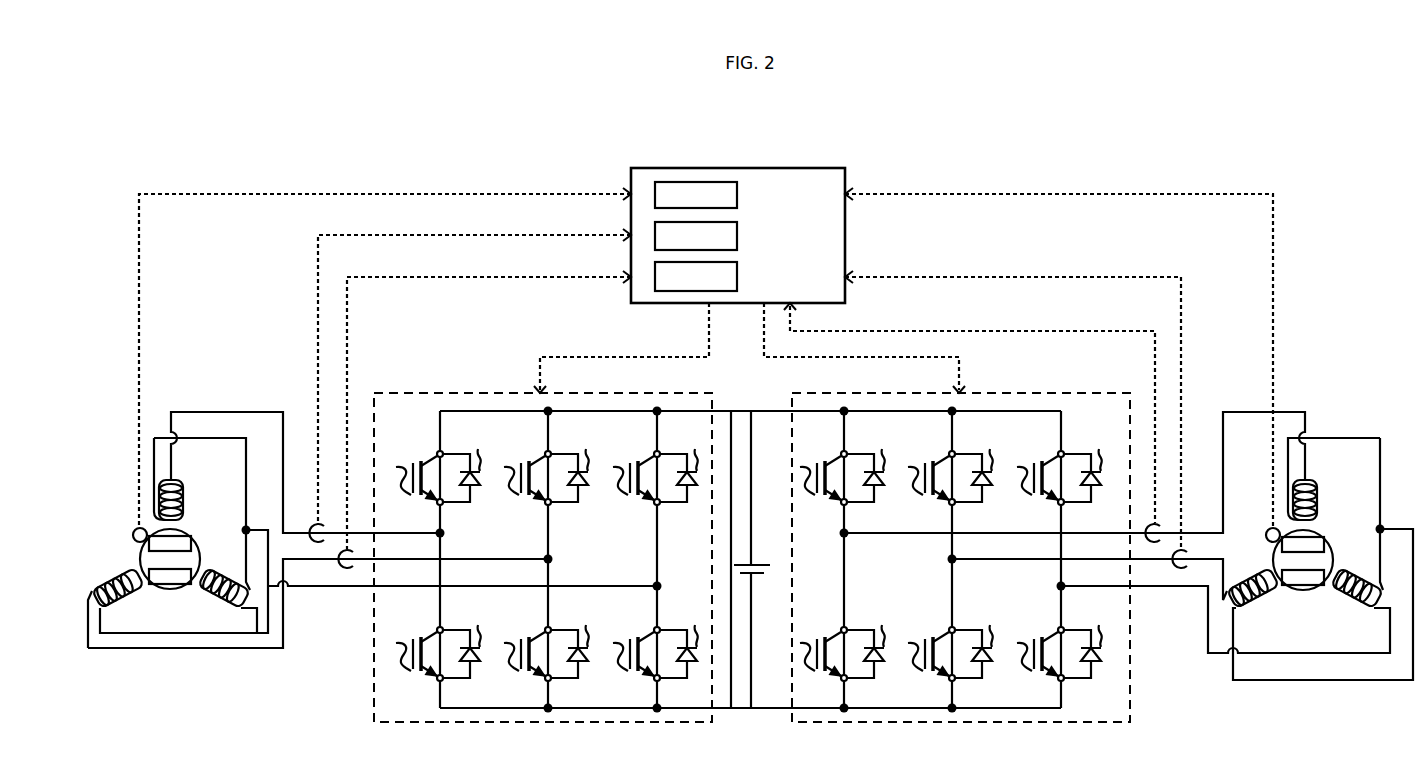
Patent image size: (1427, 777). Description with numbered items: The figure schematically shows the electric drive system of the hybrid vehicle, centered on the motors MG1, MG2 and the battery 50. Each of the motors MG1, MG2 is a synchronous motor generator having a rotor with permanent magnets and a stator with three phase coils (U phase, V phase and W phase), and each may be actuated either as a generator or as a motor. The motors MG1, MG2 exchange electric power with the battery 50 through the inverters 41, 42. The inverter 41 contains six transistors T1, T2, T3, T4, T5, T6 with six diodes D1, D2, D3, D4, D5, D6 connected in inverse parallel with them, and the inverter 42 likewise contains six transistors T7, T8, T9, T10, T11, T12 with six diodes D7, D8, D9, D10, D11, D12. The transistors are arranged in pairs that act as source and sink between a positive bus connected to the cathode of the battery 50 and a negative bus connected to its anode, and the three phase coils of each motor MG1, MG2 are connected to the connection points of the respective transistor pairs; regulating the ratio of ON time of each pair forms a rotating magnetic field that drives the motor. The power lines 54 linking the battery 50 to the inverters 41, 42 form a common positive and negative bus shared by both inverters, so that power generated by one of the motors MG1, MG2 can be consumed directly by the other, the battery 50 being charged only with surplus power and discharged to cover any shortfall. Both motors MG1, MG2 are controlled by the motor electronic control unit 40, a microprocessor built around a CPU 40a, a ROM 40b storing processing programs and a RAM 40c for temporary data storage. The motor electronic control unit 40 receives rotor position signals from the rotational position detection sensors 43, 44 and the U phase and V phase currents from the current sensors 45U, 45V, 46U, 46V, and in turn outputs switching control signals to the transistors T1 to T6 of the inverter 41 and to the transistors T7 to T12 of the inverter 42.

The motor electronic control unit 40 is at (738, 168).
The CPU 40a is at (737, 196).
The ROM 40b is at (737, 237).
The RAM 40c is at (737, 278).
The inverter 41 is at (540, 723).
The inverter 42 is at (960, 723).
The rotational position detection sensor 43 is at (136, 529).
The rotational position detection sensor 44 is at (1267, 530).
The current sensor 45U is at (318, 542).
The current sensor 45V is at (347, 568).
The current sensor 46U is at (1154, 542).
The current sensor 46V is at (1181, 568).
The battery 50 is at (760, 577).
The power lines 54 is at (736, 428).
The motor MG1 is at (121, 483).
The motor MG2 is at (1366, 422).
The transistor T1 is at (419, 488).
The transistor T2 is at (527, 488).
The transistor T3 is at (636, 488).
The transistor T4 is at (419, 664).
The transistor T5 is at (527, 664).
The transistor T6 is at (636, 664).
The transistor T7 is at (823, 488).
The transistor T8 is at (931, 488).
The transistor T9 is at (1040, 488).
The transistor T10 is at (822, 664).
The transistor T11 is at (930, 664).
The transistor T12 is at (1039, 664).
The diode D1 is at (467, 464).
The diode D2 is at (575, 464).
The diode D3 is at (684, 464).
The diode D4 is at (467, 640).
The diode D5 is at (575, 640).
The diode D6 is at (684, 640).
The diode D7 is at (871, 464).
The diode D8 is at (979, 464).
The diode D9 is at (1088, 464).
The diode D10 is at (875, 640).
The diode D11 is at (983, 640).
The diode D12 is at (1092, 640).